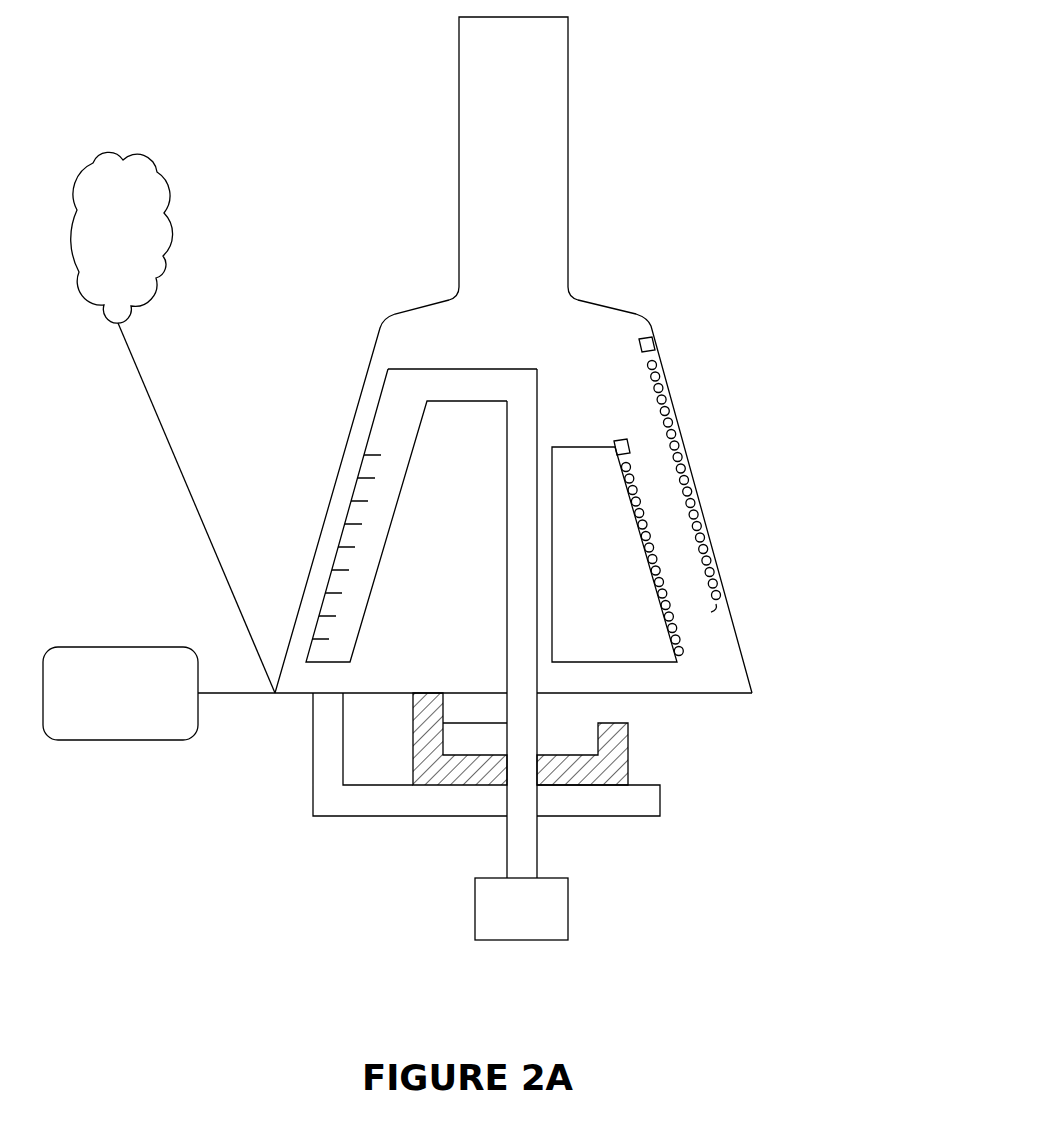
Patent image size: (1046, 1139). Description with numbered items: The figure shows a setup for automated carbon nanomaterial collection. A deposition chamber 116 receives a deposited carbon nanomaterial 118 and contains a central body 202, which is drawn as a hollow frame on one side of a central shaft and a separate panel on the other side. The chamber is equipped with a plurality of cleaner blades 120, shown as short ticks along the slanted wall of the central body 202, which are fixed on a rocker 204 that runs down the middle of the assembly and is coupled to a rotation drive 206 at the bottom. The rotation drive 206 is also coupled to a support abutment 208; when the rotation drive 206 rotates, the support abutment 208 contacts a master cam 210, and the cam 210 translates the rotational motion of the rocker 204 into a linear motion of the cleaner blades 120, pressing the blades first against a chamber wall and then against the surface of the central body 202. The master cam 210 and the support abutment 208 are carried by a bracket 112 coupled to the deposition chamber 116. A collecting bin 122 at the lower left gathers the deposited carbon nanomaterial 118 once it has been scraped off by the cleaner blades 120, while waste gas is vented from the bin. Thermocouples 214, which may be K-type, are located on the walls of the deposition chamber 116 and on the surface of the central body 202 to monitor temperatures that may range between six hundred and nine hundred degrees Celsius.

The deposition chamber 116 is at (608, 333).
The central body 202 is at (765, 630).
The rocker 204 is at (522, 568).
The cleaner blades 120 is at (360, 523).
The thermocouples 214 is at (628, 446).
The deposited carbon nanomaterial 118 is at (676, 617).
The support abutment 208 is at (453, 708).
The master cam 210 is at (622, 763).
The bracket 112 is at (320, 808).
The rotation drive 206 is at (558, 908).
The collecting bin 122 is at (120, 693).